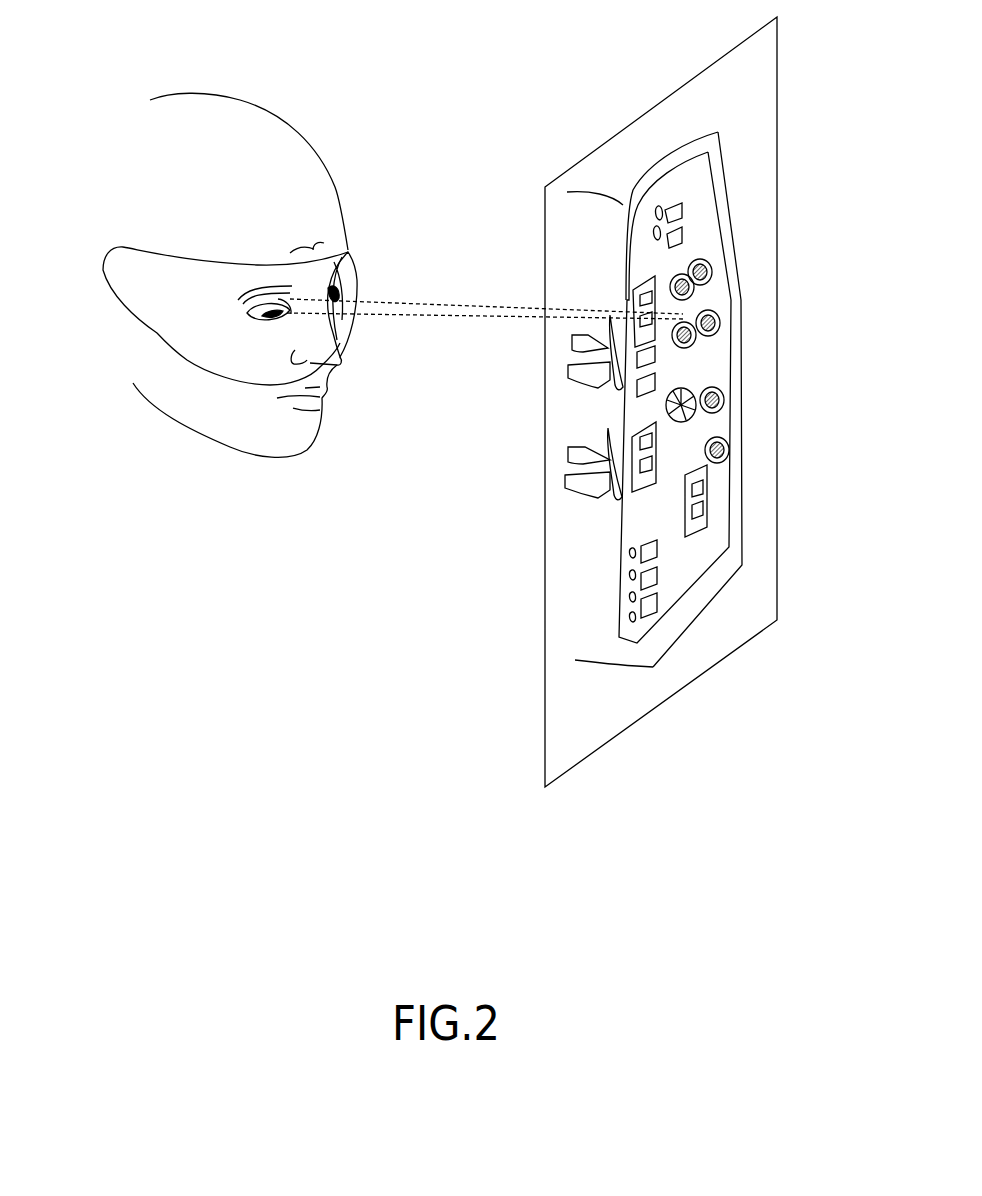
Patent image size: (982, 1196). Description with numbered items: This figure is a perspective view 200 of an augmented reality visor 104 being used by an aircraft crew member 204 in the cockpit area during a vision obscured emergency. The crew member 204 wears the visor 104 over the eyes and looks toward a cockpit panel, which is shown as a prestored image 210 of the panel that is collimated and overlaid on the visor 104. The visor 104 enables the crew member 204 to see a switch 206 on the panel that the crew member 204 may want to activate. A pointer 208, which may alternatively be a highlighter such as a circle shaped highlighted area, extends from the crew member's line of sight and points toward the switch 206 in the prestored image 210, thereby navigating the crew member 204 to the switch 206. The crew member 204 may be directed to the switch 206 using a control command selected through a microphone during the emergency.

The augmented reality visor 104 is at (160, 320).
The aircraft crew member 204 is at (230, 448).
The pointer 208 is at (425, 317).
The prestored image 210 is at (702, 385).
The switch 206 is at (713, 337).
The perspective view 200 is at (558, 865).